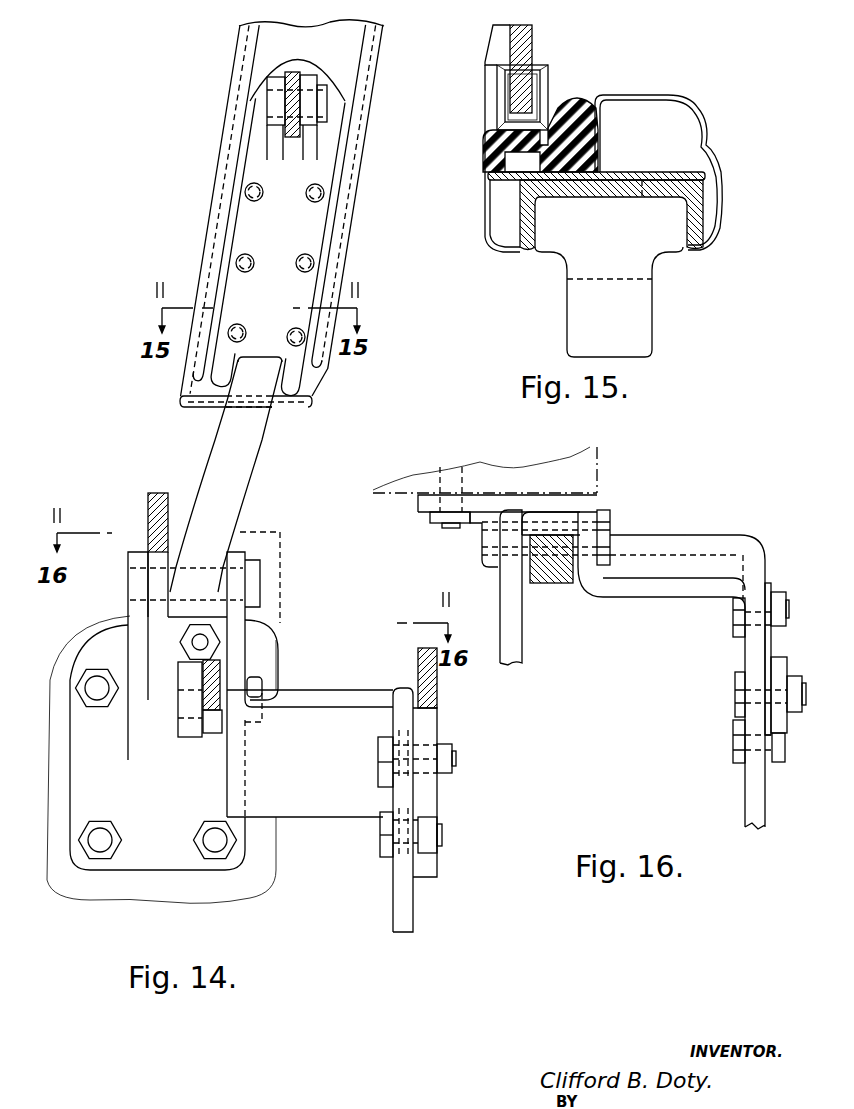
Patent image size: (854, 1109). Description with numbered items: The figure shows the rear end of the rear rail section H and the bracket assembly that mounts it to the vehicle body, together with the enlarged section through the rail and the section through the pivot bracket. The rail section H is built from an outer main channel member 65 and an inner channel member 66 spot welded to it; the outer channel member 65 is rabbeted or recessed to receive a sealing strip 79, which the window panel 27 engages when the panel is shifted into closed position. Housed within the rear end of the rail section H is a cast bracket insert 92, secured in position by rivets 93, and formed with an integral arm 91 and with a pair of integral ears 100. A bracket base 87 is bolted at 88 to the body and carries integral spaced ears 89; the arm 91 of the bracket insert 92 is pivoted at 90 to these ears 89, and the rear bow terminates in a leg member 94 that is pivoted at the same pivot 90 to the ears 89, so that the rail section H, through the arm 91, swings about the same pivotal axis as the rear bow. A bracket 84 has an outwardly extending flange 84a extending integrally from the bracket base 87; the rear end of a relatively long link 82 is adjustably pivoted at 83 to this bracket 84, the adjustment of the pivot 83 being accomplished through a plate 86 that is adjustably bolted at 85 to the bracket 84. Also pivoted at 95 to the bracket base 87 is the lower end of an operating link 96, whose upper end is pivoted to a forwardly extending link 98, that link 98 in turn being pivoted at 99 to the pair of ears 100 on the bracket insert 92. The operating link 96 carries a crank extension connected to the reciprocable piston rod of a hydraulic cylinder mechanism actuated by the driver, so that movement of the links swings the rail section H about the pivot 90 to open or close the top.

In FIG. 15, the window panel 27 is at (520, 45).
In FIG. 15, the outer main channel member 65 is at (727, 193).
In FIG. 14, the inner channel member 66 is at (345, 48).
In FIG. 15, the sealing strip 79 is at (570, 100).
In FIG. 14, the link 82 is at (438, 698).
In FIG. 16, the link 82 is at (782, 663).
In FIG. 14, the pivot 83 is at (452, 745).
In FIG. 16, the pivot 83 is at (738, 697).
In FIG. 14, the bracket 84 is at (408, 905).
In FIG. 16, the bracket 84 is at (752, 772).
In FIG. 14, the flange 84a is at (308, 707).
In FIG. 16, the flange 84a is at (653, 588).
In FIG. 14, the bolt 85 is at (433, 820).
In FIG. 16, the bolt 85 is at (732, 633).
In FIG. 14, the plate 86 is at (421, 803).
In FIG. 16, the plate 86 is at (767, 642).
In FIG. 14, the bracket base 87 is at (161, 759).
In FIG. 16, the bracket base 87 is at (507, 503).
In FIG. 14, the bolt 88 is at (102, 707).
In FIG. 14, the ears 89 is at (138, 612).
In FIG. 16, the ears 89 is at (525, 539).
In FIG. 14, the pivot 90 is at (253, 568).
In FIG. 16, the pivot 90 is at (610, 527).
In FIG. 14, the arm 91 is at (236, 487).
In FIG. 15, the arm 91 is at (637, 322).
In FIG. 16, the arm 91 is at (567, 583).
In FIG. 14, the bracket insert 92 is at (243, 233).
In FIG. 15, the bracket insert 92 is at (622, 198).
In FIG. 14, the rivets 93 is at (248, 192).
In FIG. 15, the rivets 93 is at (643, 198).
In FIG. 14, the leg member 94 is at (153, 508).
In FIG. 16, the leg member 94 is at (508, 622).
In FIG. 14, the pivot 95 is at (252, 687).
In FIG. 14, the operating link 96 is at (219, 663).
In FIG. 14, the link 98 is at (307, 73).
In FIG. 14, the pivot 99 is at (327, 93).
In FIG. 14, the ears 100 is at (273, 157).
In FIG. 14, the rear rail section H is at (230, 70).